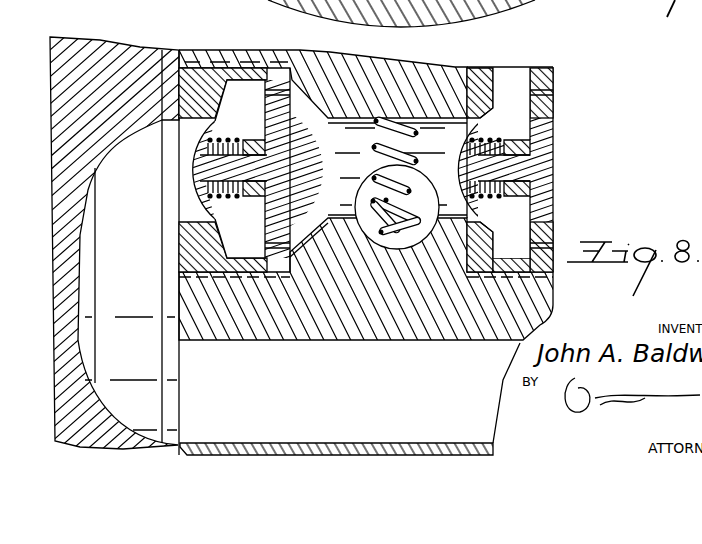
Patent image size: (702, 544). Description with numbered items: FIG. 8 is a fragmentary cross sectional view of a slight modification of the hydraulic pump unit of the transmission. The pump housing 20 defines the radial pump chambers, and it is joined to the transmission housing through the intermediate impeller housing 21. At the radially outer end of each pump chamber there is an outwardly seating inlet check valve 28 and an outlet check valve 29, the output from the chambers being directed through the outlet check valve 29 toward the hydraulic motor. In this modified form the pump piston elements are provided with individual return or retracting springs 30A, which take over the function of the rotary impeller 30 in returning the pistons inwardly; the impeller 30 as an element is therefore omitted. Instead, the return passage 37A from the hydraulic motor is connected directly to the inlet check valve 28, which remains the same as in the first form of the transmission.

The pump housing 20 is at (453, 70).
The intermediate impeller housing 21 is at (110, 48).
The inlet check valve 28 is at (234, 170).
The outlet check valve 29 is at (488, 116).
The rotary impeller 30 is at (107, 275).
The return or retracting springs 30A is at (390, 237).
The return passage 37A is at (485, 410).